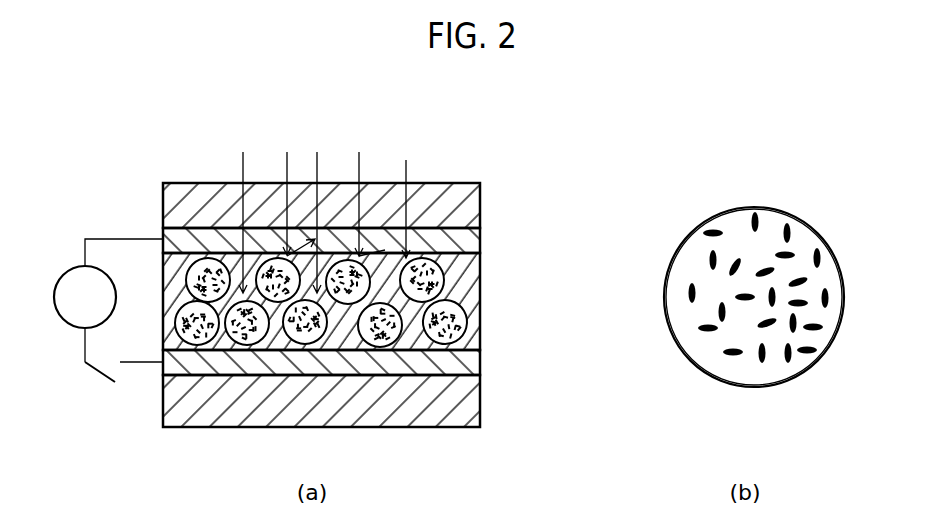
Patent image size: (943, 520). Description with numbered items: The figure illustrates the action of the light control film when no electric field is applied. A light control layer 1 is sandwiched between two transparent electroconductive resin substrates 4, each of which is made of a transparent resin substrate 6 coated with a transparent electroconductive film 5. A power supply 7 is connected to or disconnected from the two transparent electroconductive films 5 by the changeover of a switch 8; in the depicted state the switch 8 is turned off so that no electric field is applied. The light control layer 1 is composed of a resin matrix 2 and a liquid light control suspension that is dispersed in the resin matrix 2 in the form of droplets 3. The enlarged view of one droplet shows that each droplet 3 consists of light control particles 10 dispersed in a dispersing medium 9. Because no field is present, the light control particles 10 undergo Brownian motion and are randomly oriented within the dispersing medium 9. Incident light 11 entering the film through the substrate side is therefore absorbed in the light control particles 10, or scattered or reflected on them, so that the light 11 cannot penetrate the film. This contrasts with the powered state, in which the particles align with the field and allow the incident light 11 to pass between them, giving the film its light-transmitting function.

The light control layer 1 is at (379, 301).
The resin matrix 2 is at (480, 285).
The droplets 3 is at (480, 330).
The transparent electroconductive resin substrate 4 is at (379, 305).
The transparent electroconductive film 5 is at (480, 244).
The transparent resin substrate 6 is at (480, 200).
The power supply 7 is at (72, 268).
The switch 8 is at (96, 373).
The dispersing medium 9 is at (795, 228).
The light control particles 10 is at (815, 325).
The incident light 11 is at (406, 160).